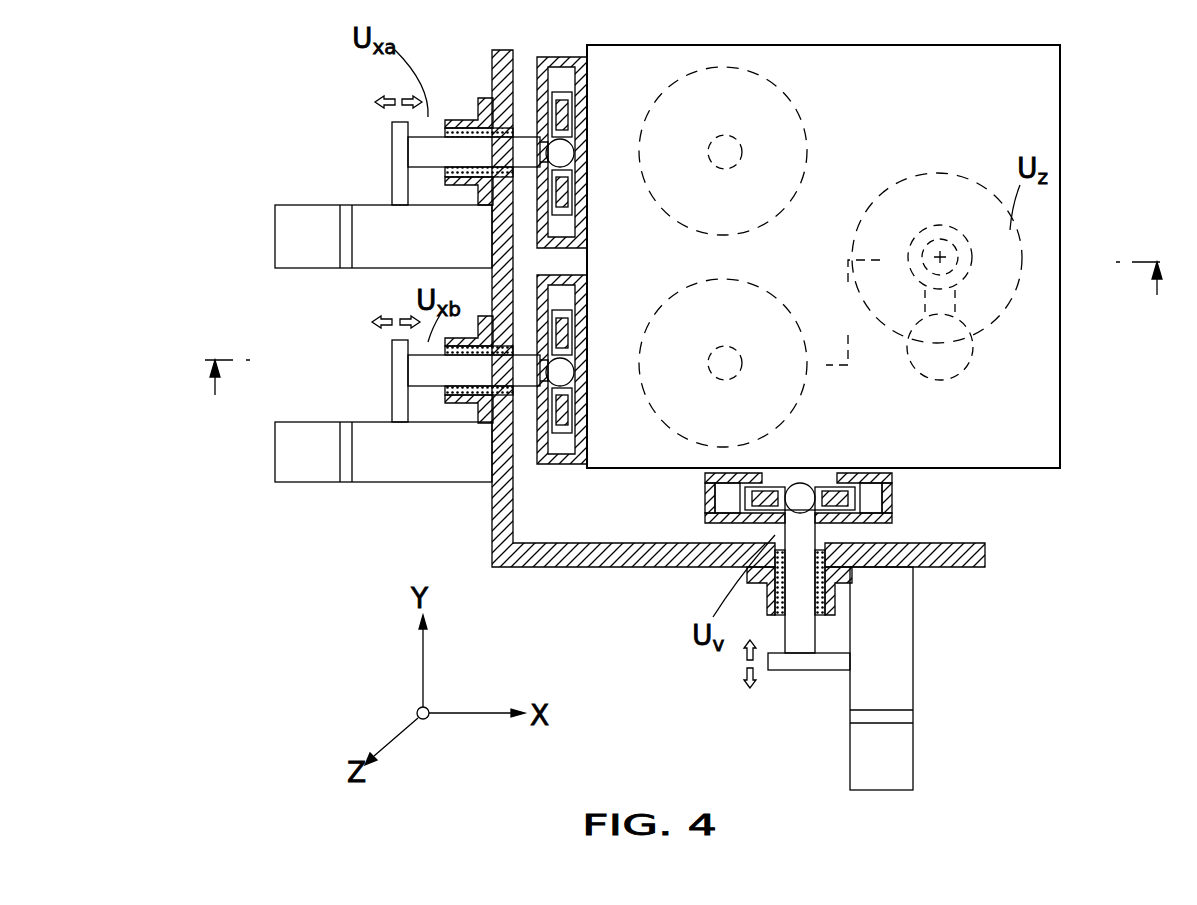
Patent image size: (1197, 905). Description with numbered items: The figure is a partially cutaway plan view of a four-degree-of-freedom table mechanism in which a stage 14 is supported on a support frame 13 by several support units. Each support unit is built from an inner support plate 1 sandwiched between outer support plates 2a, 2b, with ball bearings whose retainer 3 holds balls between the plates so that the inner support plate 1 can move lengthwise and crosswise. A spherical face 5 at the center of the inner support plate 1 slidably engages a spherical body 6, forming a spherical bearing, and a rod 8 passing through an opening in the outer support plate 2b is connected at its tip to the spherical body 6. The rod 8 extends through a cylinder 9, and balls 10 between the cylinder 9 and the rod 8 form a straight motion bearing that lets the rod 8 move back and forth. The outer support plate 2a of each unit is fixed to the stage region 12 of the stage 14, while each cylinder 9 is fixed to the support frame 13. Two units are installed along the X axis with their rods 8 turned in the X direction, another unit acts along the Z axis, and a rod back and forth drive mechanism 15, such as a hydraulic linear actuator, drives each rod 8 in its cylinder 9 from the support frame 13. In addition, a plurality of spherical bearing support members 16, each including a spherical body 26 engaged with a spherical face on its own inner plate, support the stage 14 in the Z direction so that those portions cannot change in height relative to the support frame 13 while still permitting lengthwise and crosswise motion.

The inner support plate 1 is at (760, 520).
The outer support plate 2a is at (892, 478).
The outer support plate 2b is at (892, 520).
The retainer 3 is at (892, 492).
The spherical face 5 is at (686, 346).
The spherical body 6 is at (568, 148).
The rod 8 is at (432, 147).
The cylinder 9 is at (852, 595).
The balls 10 is at (473, 117).
The stage region 12 is at (588, 80).
The support frame 13 is at (565, 567).
The stage 14 is at (877, 73).
The rod back and forth drive mechanism 15 is at (375, 482).
The spherical bearing support member 16 is at (787, 95).
The spherical body 26 is at (735, 153).